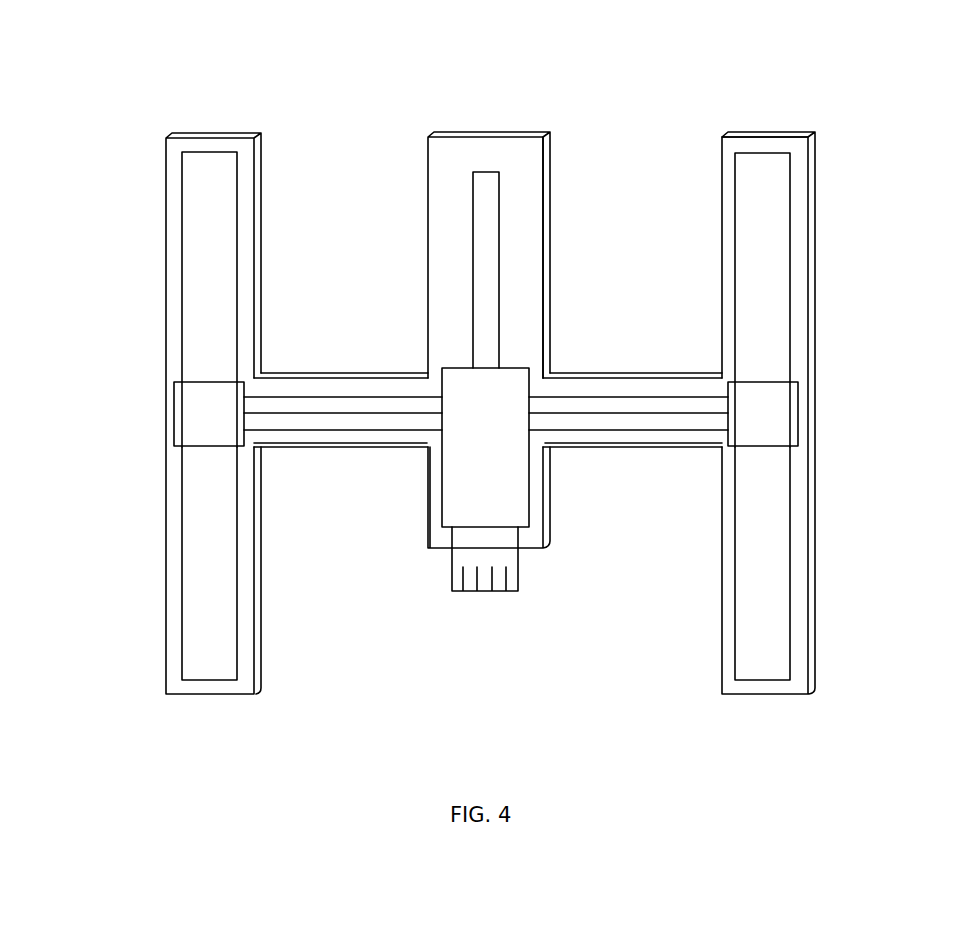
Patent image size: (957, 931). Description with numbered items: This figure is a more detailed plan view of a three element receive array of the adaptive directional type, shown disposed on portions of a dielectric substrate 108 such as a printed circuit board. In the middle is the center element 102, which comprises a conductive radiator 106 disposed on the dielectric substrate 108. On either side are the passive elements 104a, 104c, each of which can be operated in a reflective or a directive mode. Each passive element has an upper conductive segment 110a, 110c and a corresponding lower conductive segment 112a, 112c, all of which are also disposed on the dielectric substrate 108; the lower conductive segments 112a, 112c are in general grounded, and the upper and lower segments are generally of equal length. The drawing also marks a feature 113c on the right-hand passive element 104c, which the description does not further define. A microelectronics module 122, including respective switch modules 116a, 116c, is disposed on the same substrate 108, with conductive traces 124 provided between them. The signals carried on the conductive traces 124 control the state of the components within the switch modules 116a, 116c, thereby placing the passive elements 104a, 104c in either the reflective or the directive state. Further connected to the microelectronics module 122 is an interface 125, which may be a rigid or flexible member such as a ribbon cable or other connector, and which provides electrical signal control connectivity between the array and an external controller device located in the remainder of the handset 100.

The handset 100 is at (83, 53).
The center element 102 is at (460, 137).
The passive element 104a is at (190, 138).
The passive element 104c is at (775, 134).
The conductive radiator 106 is at (487, 202).
The dielectric substrate 108 is at (535, 172).
The upper conductive segment 110a is at (220, 258).
The upper conductive segment 110c is at (780, 258).
The lower conductive segment 112a is at (190, 562).
The lower conductive segment 112c is at (777, 626).
The top edge of right side bar 113c is at (727, 147).
The switch module 116a is at (185, 402).
The switch module 116c is at (785, 410).
The microelectronics module 122 is at (470, 472).
The conductive traces 124 is at (595, 397).
The interface 125 is at (518, 577).